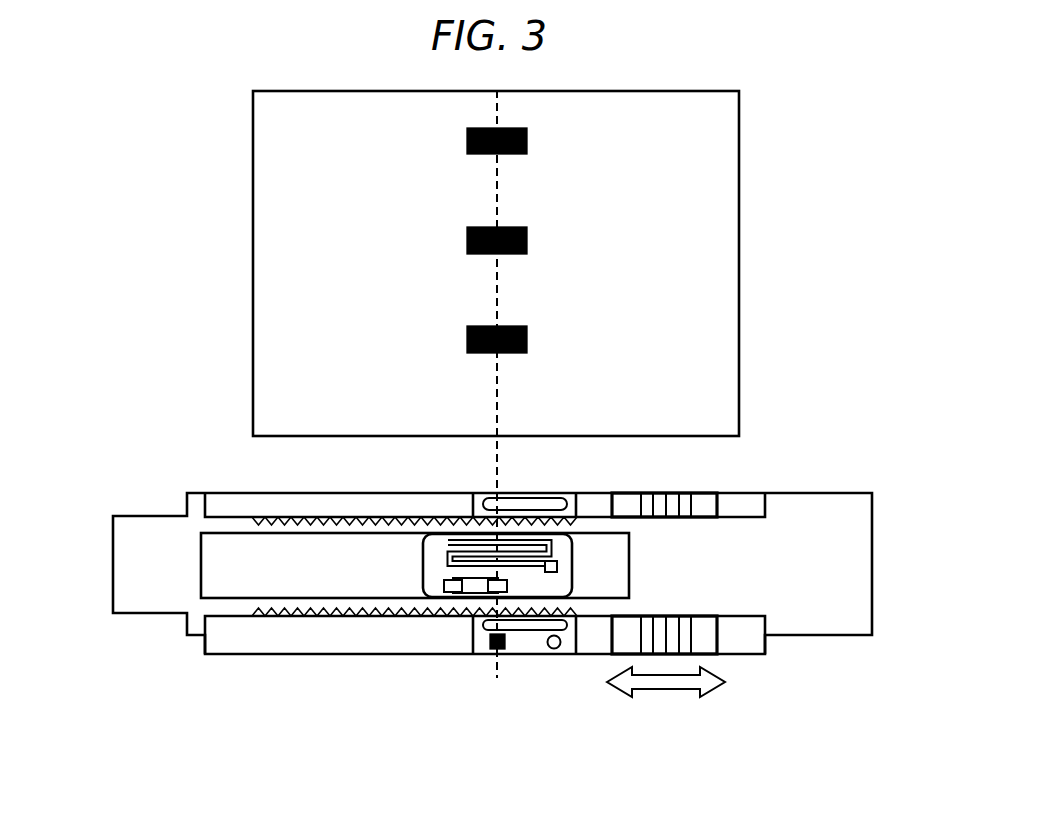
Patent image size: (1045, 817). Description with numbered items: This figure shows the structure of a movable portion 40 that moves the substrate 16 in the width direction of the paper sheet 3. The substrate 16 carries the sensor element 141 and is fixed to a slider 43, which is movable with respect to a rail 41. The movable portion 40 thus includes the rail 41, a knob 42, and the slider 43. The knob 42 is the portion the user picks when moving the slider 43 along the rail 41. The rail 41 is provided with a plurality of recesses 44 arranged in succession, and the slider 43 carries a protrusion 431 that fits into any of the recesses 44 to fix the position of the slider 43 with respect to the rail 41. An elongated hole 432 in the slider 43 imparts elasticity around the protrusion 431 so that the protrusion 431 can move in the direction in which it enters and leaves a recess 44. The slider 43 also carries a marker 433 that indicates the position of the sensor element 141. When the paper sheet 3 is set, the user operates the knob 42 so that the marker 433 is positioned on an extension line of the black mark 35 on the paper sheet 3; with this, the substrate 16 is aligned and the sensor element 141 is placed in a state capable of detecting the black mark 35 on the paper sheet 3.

The paper sheet 3 is at (740, 153).
The black mark 35 is at (527, 141).
The movable portion 40 is at (771, 507).
The rail 41 is at (597, 533).
The knob 42 is at (678, 616).
The slider 43 is at (524, 645).
The protrusion 431 is at (525, 615).
The elongated hole 432 is at (529, 633).
The marker 433 is at (494, 650).
The substrate 16 is at (433, 553).
The sensor element 141 is at (488, 588).
The recesses 44 is at (317, 612).